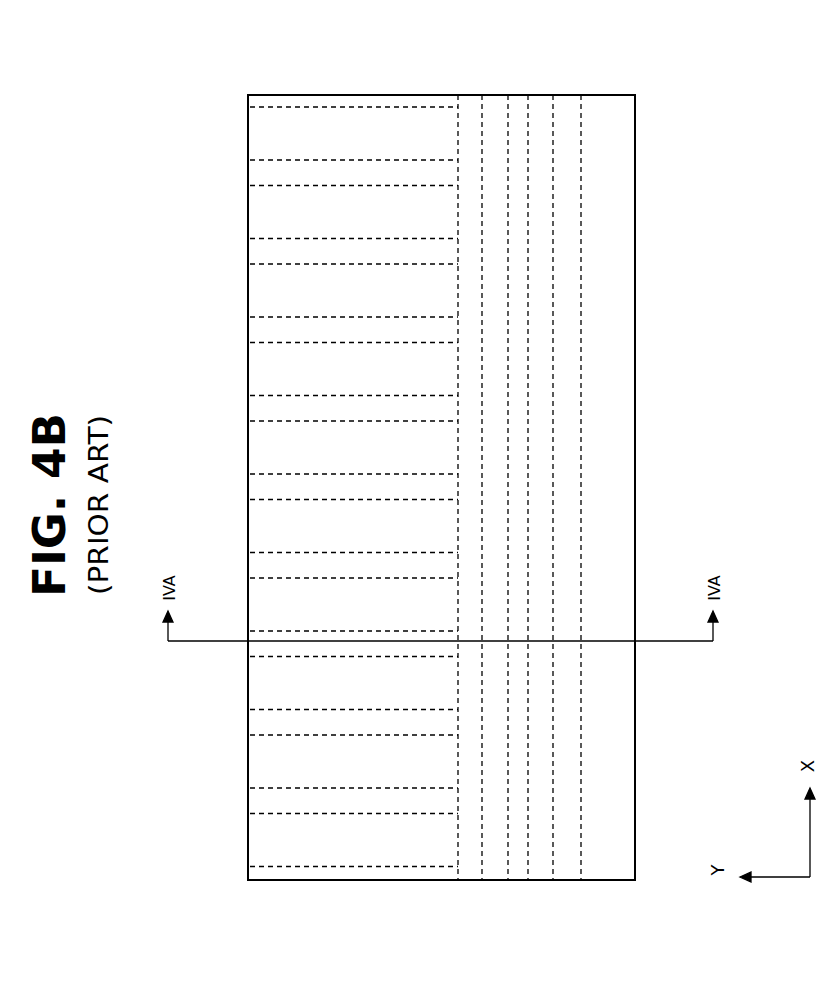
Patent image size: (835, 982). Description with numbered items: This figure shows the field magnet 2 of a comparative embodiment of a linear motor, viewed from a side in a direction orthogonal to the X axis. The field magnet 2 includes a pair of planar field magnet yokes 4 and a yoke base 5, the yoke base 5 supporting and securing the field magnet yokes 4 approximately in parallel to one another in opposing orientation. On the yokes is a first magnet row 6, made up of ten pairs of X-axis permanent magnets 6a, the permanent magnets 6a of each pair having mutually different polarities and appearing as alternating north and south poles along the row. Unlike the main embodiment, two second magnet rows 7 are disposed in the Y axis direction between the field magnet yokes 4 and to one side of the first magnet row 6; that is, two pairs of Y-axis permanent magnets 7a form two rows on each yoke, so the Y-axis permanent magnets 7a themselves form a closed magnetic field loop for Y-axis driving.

The field magnet 2 is at (224, 877).
The field magnet yoke 4 is at (520, 100).
The yoke base 5 is at (608, 100).
The first magnet row 6 is at (242, 841).
The X-axis permanent magnet 6a is at (456, 212).
The second magnet row 7 is at (470, 878).
The Y-axis permanent magnet 7a is at (545, 706).